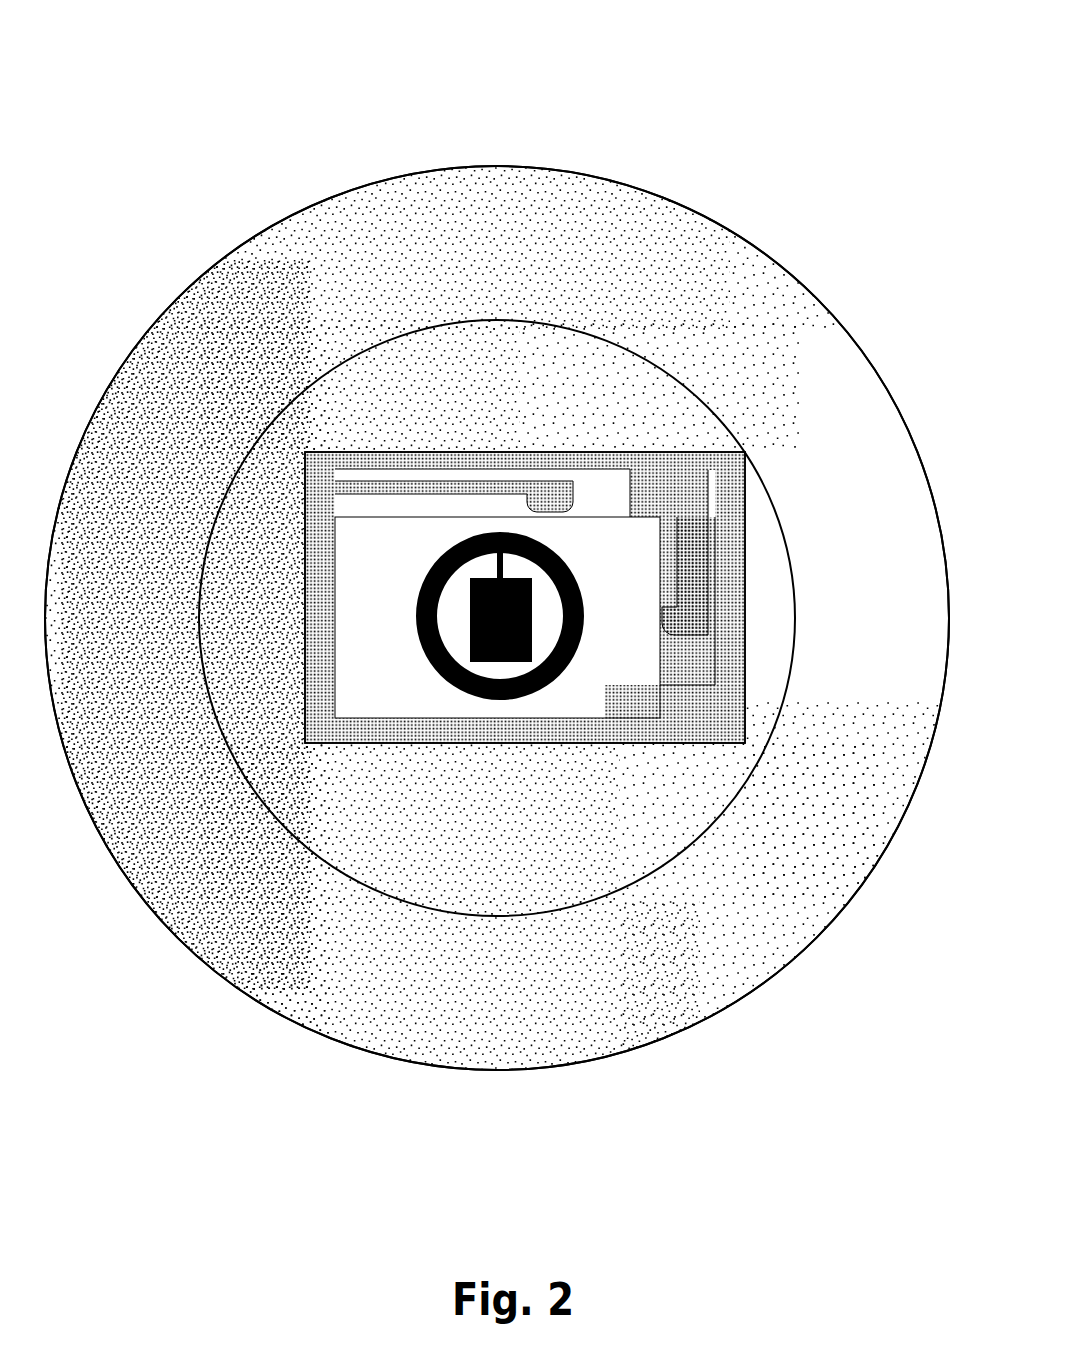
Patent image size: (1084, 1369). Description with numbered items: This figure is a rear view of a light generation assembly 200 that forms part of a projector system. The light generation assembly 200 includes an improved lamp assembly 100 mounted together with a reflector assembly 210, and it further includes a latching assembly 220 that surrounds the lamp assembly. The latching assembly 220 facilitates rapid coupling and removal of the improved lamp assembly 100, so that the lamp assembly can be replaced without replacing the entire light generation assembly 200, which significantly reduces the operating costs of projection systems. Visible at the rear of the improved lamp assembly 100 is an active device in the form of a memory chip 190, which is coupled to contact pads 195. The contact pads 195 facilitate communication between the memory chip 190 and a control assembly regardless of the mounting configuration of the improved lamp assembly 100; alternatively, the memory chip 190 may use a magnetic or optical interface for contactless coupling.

The light generation assembly 200 is at (256, 62).
The reflector assembly 210 is at (757, 343).
The latching assembly 220 is at (410, 444).
The improved lamp assembly 100 is at (374, 726).
The memory chip 190 is at (503, 662).
The contact pads 195 is at (514, 510).